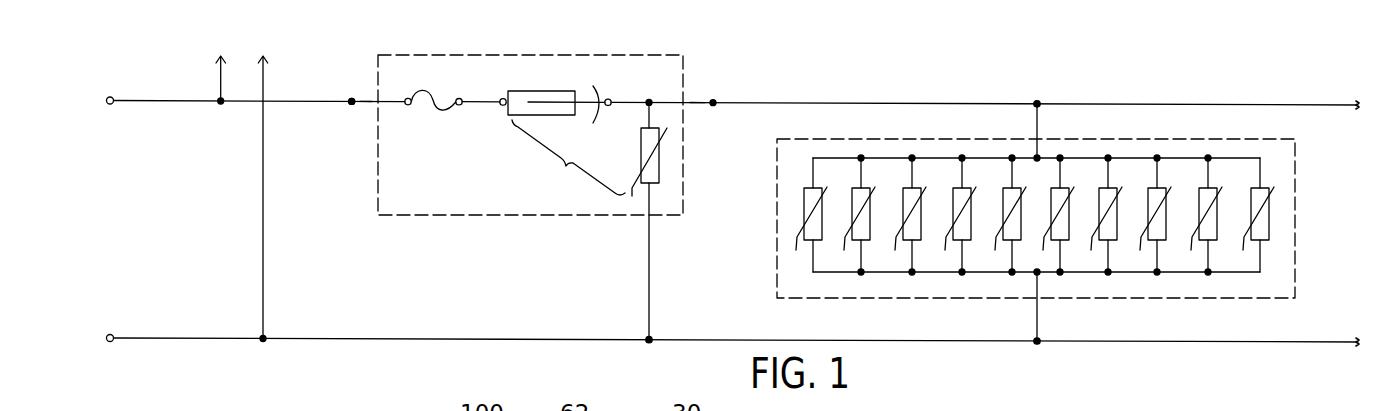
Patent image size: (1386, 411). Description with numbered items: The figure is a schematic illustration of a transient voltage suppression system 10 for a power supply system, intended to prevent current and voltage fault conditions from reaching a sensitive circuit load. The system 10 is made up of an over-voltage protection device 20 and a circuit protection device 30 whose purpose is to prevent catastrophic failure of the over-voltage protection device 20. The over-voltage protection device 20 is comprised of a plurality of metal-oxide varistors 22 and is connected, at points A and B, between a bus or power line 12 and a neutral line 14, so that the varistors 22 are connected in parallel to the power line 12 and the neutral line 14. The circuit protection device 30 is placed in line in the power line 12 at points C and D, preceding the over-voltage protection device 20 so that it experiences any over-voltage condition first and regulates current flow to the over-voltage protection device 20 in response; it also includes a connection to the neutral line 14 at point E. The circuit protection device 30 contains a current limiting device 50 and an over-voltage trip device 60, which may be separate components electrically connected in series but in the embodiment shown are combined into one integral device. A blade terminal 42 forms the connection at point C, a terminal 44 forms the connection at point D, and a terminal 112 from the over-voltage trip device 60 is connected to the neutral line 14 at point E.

The transient voltage suppression system 10 is at (923, 60).
The power line 12 is at (300, 103).
The neutral line 14 is at (412, 338).
The over-voltage protection device 20 is at (993, 304).
The metal-oxide varistors 22 is at (860, 205).
The circuit protection device 30 is at (515, 220).
The blade terminal 42 is at (367, 100).
The terminal 44 is at (697, 102).
The current limiting device 50 is at (437, 113).
The over-voltage trip device 60 is at (568, 158).
The terminal 112 is at (648, 292).
The point A is at (1039, 100).
The point B is at (1028, 347).
The point C is at (351, 105).
The point D is at (712, 108).
The point E is at (652, 337).